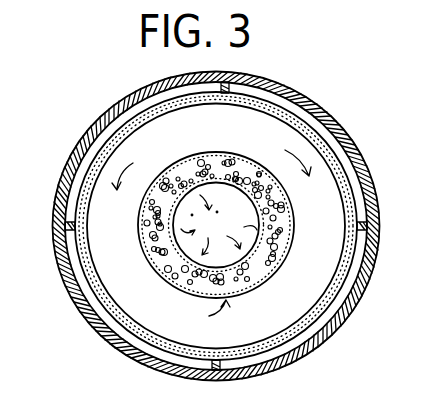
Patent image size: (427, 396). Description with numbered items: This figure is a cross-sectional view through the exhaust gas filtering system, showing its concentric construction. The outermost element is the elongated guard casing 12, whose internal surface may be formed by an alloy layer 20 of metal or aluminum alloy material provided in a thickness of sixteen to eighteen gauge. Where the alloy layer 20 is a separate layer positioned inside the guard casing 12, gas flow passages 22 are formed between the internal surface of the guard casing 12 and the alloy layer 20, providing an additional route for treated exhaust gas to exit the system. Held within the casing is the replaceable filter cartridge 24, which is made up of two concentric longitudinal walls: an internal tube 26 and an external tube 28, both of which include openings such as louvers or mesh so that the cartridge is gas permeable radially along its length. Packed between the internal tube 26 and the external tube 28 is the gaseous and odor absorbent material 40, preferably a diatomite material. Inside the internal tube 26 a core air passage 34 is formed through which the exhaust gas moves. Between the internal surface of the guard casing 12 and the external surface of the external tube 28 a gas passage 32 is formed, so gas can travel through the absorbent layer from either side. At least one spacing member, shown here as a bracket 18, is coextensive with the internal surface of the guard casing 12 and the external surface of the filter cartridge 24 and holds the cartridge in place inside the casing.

The guard casing 12 is at (122, 100).
The bracket 18 is at (240, 78).
The alloy layer 20 is at (307, 119).
The gas flow passages 22 is at (341, 141).
The filter cartridge 24 is at (207, 316).
The internal tube 26 is at (264, 238).
The external tube 28 is at (255, 283).
The gas passage 32 is at (227, 135).
The core air passage 34 is at (245, 220).
The absorbent material 40 is at (148, 255).